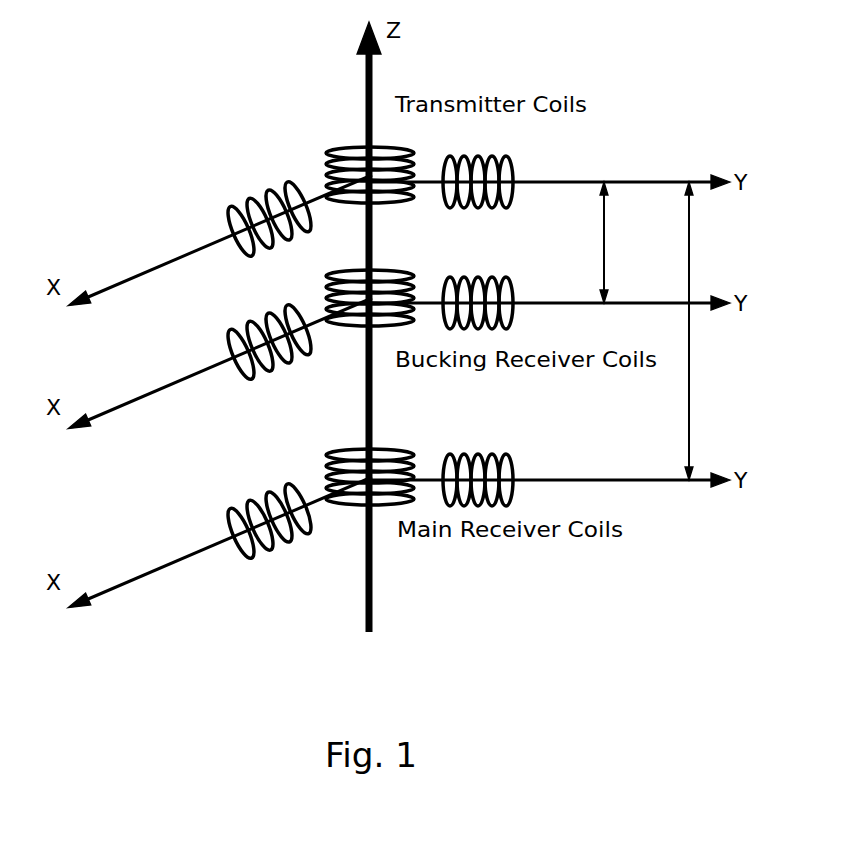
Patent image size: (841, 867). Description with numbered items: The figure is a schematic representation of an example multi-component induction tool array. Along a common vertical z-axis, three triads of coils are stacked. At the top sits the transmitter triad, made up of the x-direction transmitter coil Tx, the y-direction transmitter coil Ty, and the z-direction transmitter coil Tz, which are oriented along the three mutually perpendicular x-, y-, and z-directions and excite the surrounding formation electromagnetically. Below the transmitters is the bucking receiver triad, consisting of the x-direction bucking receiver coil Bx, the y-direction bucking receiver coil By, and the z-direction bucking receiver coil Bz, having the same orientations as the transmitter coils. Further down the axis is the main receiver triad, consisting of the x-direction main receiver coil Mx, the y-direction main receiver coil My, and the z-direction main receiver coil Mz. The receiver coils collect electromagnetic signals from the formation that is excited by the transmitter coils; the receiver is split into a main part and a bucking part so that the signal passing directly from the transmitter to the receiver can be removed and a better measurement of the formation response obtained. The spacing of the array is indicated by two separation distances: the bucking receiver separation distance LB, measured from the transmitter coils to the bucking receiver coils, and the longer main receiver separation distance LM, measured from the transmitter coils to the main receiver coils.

The z-direction transmitter coil Tz is at (362, 164).
The y-direction transmitter coil Ty is at (478, 167).
The x-direction transmitter coil Tx is at (256, 219).
The z-direction bucking receiver coil Bz is at (362, 287).
The y-direction bucking receiver coil By is at (478, 288).
The x-direction bucking receiver coil Bx is at (256, 342).
The z-direction main receiver coil Mz is at (362, 464).
The y-direction main receiver coil My is at (478, 465).
The x-direction main receiver coil Mx is at (256, 521).
The bucking receiver separation distance LB is at (622, 242).
The main receiver separation distance LM is at (705, 331).